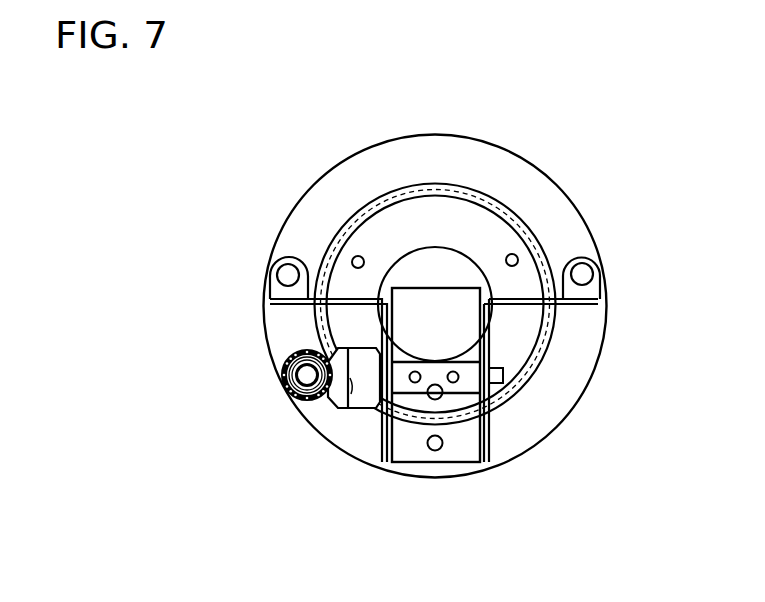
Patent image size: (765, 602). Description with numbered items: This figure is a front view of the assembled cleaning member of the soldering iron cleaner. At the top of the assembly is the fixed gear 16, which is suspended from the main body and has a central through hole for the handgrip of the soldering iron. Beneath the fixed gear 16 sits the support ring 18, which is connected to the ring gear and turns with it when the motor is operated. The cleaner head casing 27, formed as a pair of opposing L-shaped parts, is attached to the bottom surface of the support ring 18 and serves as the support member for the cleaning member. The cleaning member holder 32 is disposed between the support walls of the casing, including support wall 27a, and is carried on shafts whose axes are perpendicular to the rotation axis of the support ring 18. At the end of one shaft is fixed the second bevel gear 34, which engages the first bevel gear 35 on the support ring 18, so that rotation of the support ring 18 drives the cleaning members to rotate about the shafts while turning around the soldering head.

The fixed gear 16 is at (458, 218).
The support ring 18 is at (547, 207).
The cleaner head casing 27 is at (327, 263).
The support wall 27a is at (490, 432).
The cleaning member holder 32 is at (405, 385).
The second bevel gear 34 is at (355, 390).
The first bevel gear 35 is at (283, 397).